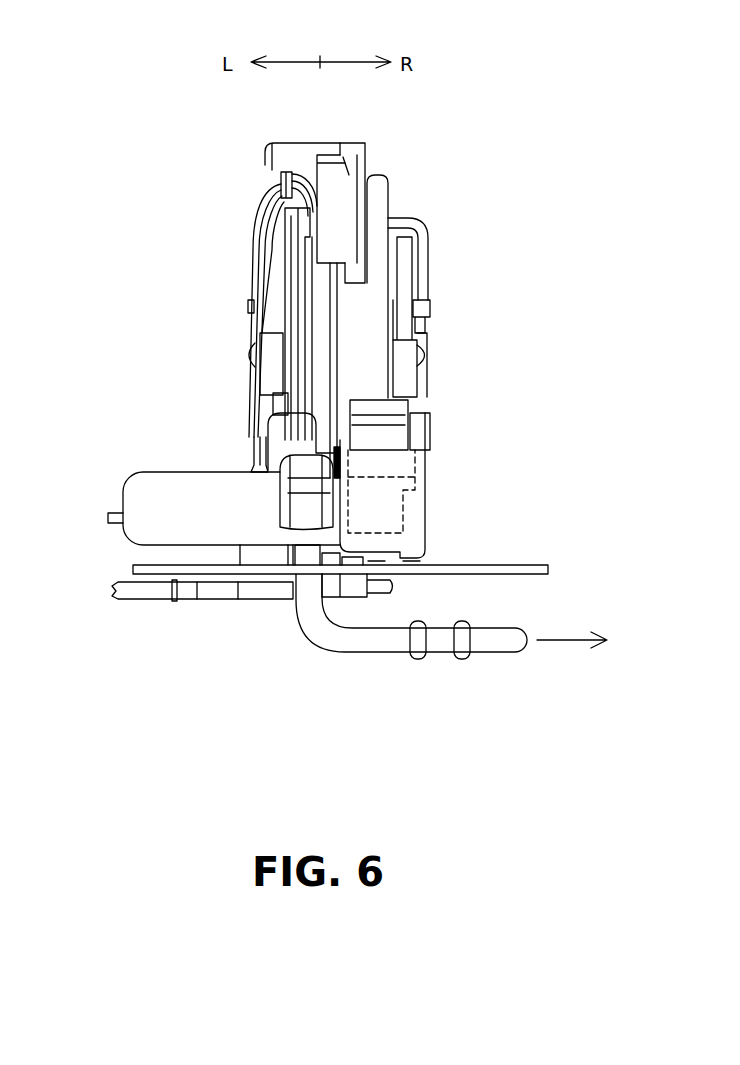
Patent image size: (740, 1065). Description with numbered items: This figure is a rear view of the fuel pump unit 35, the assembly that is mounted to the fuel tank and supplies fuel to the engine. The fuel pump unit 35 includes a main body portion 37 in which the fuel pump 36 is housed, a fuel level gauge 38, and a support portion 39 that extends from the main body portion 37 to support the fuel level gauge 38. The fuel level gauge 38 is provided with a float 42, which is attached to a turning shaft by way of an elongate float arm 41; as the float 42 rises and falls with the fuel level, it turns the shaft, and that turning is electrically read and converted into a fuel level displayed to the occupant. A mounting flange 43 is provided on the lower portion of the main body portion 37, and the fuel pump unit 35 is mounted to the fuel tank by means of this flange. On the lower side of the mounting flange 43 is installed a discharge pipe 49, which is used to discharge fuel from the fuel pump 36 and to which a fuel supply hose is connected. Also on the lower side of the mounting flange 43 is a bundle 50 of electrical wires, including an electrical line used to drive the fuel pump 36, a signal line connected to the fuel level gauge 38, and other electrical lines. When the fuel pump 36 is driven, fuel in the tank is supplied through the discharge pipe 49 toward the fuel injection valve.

The fuel pump unit 35 is at (112, 226).
The fuel pump 36 is at (272, 352).
The main body portion 37 is at (277, 158).
The fuel level gauge 38 is at (327, 223).
The support portion 39 is at (360, 163).
The float arm 41 is at (420, 306).
The float 42 is at (197, 487).
The mounting flange 43 is at (512, 564).
The discharge pipe 49 is at (500, 627).
The bundle of electrical wires 50 is at (153, 590).